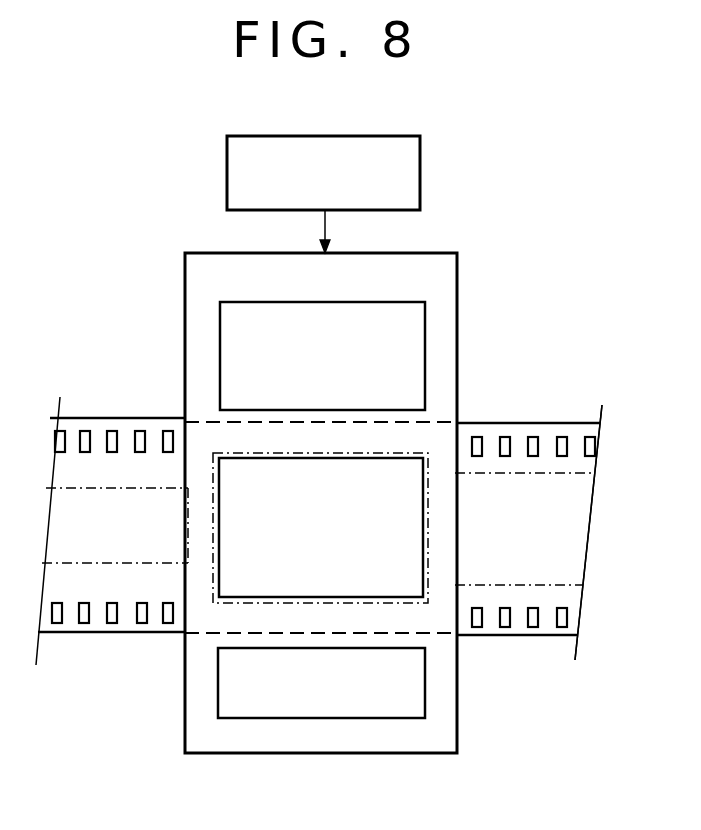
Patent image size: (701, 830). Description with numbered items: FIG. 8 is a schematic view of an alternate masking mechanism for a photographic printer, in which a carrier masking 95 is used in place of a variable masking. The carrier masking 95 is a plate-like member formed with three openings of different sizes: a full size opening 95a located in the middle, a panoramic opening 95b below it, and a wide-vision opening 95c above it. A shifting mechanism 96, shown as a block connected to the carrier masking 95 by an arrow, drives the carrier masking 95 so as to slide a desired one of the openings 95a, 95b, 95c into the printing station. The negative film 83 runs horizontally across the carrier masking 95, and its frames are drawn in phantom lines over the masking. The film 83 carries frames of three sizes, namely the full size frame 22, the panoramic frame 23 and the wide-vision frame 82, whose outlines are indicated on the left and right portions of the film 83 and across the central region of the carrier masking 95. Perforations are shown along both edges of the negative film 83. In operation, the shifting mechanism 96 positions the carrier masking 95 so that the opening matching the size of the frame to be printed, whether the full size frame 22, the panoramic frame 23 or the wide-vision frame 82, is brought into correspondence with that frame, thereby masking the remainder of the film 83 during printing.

The shifting mechanism 96 is at (420, 170).
The carrier masking 95 is at (420, 253).
The wide-vision opening 95c is at (425, 320).
The full size opening 95a is at (428, 590).
The panoramic opening 95b is at (425, 705).
The full size frame 22 is at (218, 455).
The panoramic frame 23 is at (100, 563).
The wide-vision frame 82 is at (517, 473).
The negative film 83 is at (565, 423).